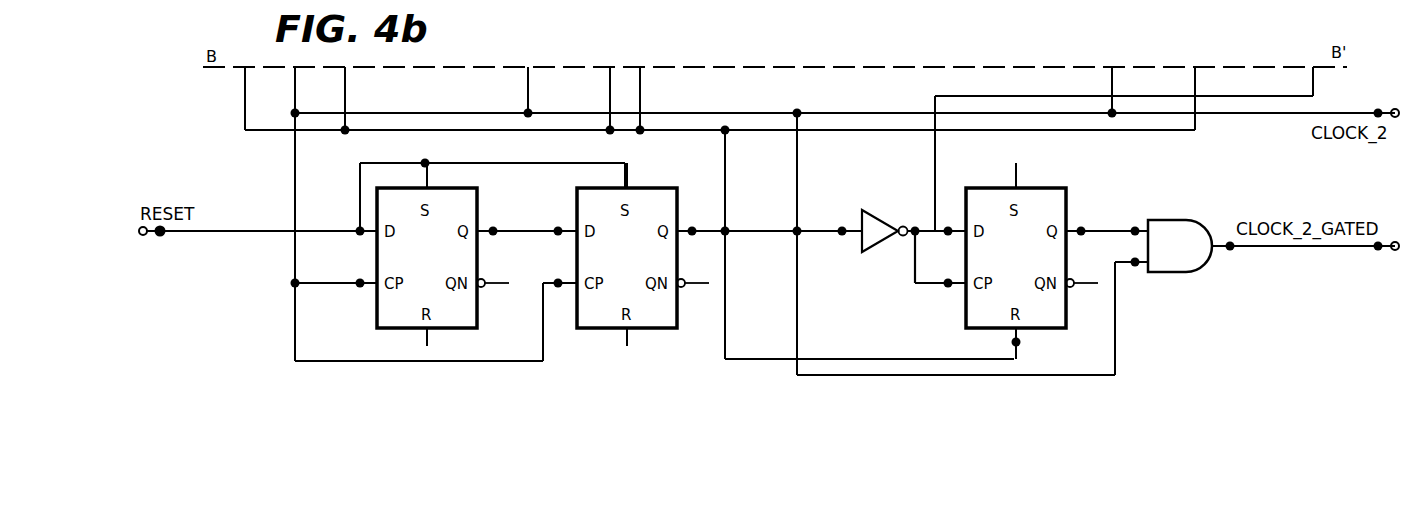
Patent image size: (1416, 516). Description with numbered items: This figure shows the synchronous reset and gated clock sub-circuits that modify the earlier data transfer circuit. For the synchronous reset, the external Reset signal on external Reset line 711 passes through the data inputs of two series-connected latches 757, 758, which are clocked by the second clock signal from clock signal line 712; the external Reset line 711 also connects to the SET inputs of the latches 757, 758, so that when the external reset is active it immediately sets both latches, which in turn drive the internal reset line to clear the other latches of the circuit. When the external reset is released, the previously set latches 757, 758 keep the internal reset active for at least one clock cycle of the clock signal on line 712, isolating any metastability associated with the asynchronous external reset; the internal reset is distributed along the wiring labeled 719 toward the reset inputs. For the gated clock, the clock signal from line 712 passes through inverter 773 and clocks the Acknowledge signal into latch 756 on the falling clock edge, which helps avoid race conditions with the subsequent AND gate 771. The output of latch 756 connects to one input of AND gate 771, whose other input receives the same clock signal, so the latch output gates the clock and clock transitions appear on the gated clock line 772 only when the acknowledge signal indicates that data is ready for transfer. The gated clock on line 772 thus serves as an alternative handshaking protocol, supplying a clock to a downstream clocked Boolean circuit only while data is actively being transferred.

The external Reset line 711 is at (358, 172).
The Clock_2 signal line 712 is at (290, 180).
The node 719 is at (781, 265).
The latch 756 is at (1054, 188).
The latch 757 is at (605, 328).
The latch 758 is at (377, 315).
The AND gate 771 is at (1195, 272).
The Clock_2_Gated line 772 is at (1318, 248).
The inverter 773 is at (882, 201).